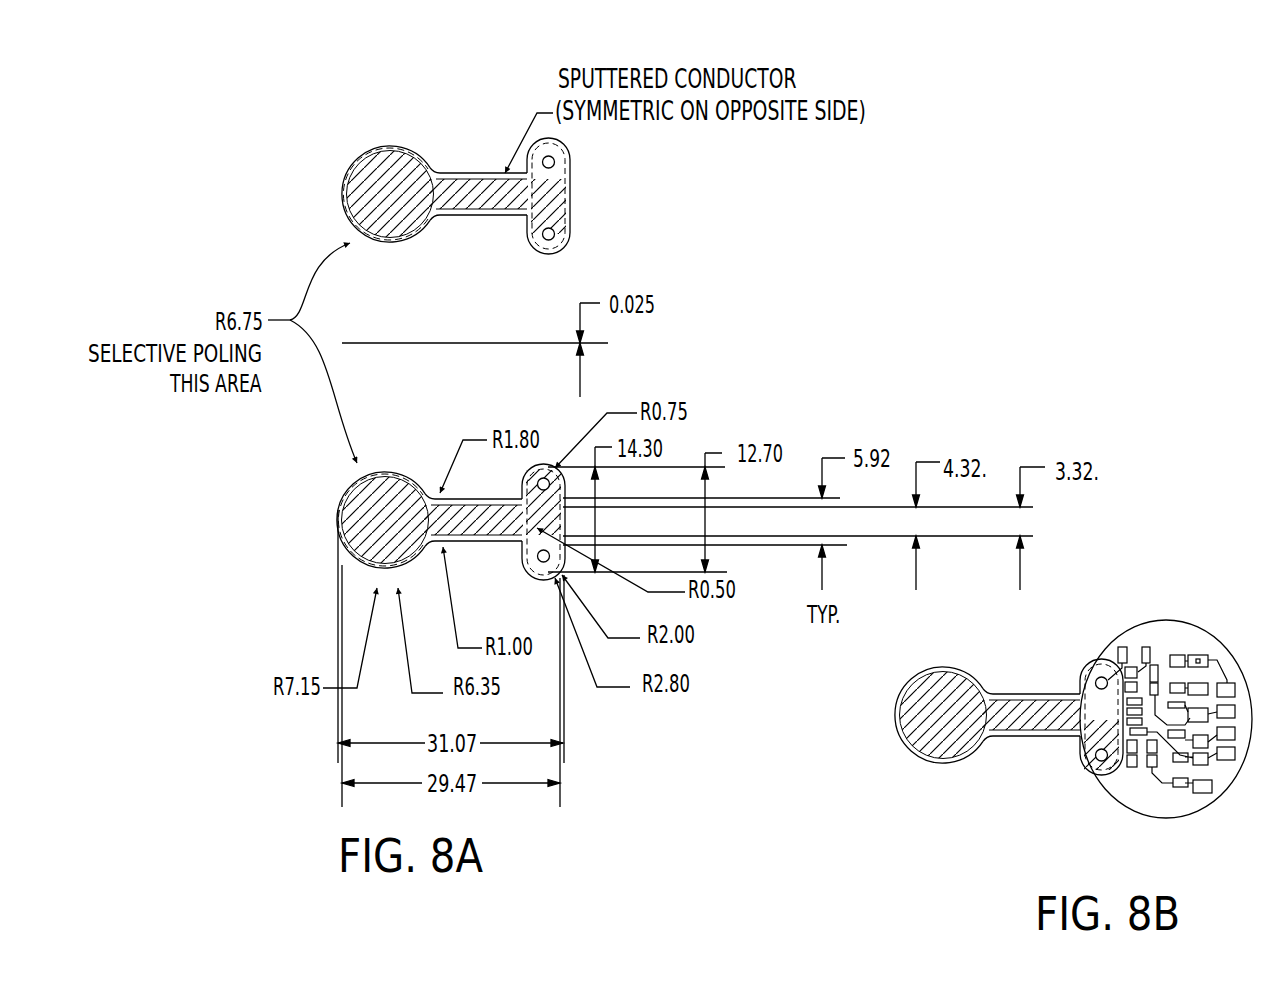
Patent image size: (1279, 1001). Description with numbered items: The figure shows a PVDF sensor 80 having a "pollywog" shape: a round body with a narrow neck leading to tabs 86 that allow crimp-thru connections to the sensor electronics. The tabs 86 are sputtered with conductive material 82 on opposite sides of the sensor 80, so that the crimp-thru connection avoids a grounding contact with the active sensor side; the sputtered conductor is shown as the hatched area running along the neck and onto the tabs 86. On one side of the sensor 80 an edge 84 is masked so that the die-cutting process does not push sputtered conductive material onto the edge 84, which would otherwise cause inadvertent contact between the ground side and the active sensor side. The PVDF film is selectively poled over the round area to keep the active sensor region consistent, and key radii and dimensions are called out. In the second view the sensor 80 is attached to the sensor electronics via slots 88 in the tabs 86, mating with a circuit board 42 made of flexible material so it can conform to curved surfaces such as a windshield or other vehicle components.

In FIG. 8A, the sensor 80 is at (427, 354).
In FIG. 8A, the conductive material 82 is at (463, 173).
In FIG. 8B, the conductive material 82 is at (1033, 695).
In FIG. 8A, the edge 84 is at (342, 193).
In FIG. 8B, the edge 84 is at (975, 765).
In FIG. 8A, the tabs 86 is at (570, 160).
In FIG. 8B, the tabs 86 is at (1102, 778).
In FIG. 8A, the slots 88 is at (556, 239).
In FIG. 8B, the slots 88 is at (1097, 753).
In FIG. 8B, the circuit board 42 is at (1147, 622).